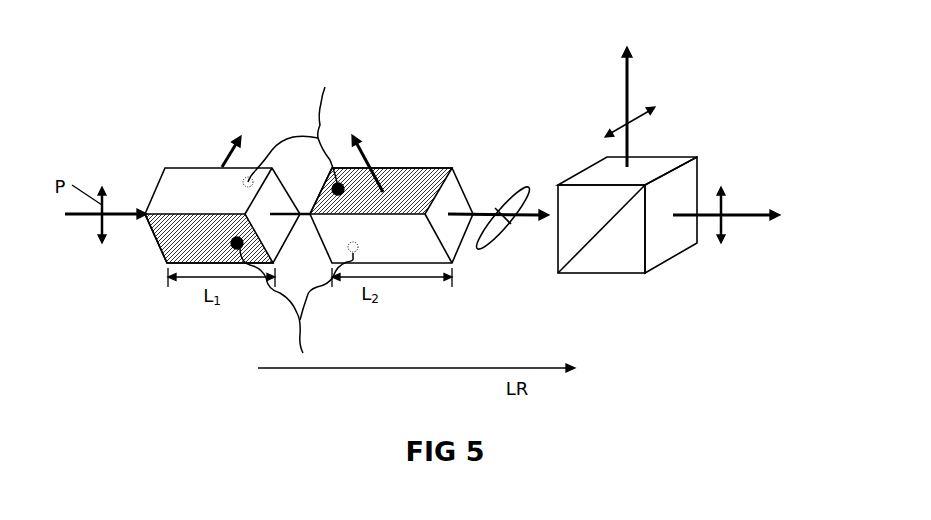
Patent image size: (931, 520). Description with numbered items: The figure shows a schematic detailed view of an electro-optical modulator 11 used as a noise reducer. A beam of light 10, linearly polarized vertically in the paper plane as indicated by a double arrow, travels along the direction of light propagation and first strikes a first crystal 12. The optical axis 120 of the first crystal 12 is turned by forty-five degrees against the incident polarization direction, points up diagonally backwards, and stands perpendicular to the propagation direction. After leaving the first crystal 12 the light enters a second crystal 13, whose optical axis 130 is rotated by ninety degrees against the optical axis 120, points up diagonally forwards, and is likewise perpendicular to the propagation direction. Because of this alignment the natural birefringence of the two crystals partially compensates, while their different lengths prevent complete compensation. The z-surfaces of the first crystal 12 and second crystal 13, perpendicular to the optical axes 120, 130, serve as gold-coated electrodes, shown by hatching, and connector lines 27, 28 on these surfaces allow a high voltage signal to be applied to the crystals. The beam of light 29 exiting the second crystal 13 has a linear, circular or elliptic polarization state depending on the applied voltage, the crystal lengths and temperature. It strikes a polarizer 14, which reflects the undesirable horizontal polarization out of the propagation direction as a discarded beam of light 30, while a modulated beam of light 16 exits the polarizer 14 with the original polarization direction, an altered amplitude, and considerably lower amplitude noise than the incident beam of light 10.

The beam of light 10 is at (87, 216).
The electro-optical modulator 11 is at (461, 112).
The first crystal 12 is at (175, 178).
The optical axis of the first crystal 120 is at (232, 133).
The second crystal 13 is at (399, 253).
The optical axis of the second crystal 130 is at (362, 143).
The polarizer 14 is at (612, 265).
The modulated beam of light 16 is at (740, 212).
The connector line 27 is at (297, 328).
The connector line 28 is at (322, 100).
The beam of light exiting the second crystal 29 is at (528, 223).
The reflected beam of light 30 is at (627, 83).